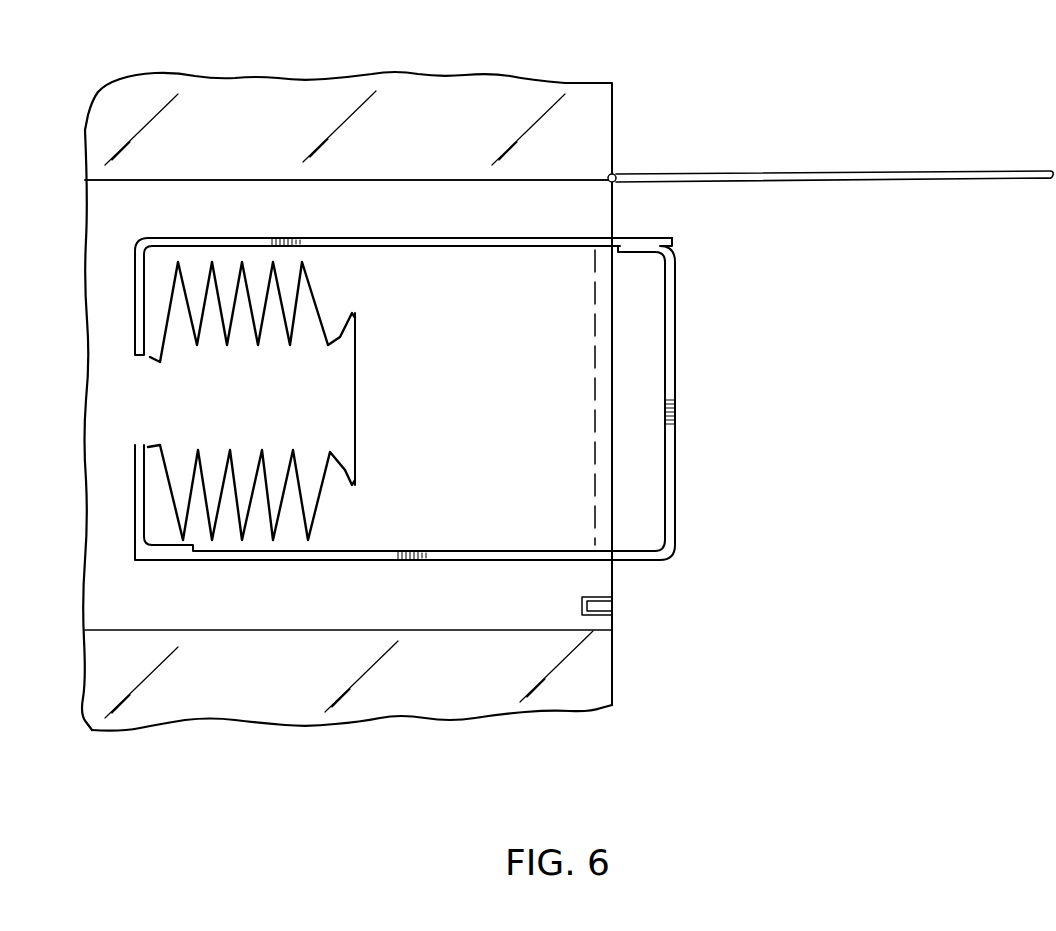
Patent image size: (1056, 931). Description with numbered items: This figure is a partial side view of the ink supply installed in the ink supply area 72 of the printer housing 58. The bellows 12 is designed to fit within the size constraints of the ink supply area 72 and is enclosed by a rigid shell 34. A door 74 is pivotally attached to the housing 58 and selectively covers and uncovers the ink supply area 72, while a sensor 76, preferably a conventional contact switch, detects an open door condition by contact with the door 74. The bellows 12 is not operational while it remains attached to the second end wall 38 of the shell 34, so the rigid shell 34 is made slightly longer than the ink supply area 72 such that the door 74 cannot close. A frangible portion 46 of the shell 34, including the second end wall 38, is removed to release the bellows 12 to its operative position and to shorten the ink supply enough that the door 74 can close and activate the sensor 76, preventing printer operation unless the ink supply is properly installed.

The bellows 12 is at (315, 285).
The rigid shell 34 is at (483, 248).
The second end wall 38 is at (675, 373).
The frangible portion 46 is at (640, 440).
The housing 58 is at (582, 105).
The ink supply area 72 is at (523, 206).
The door 74 is at (825, 172).
The sensor 76 is at (603, 605).